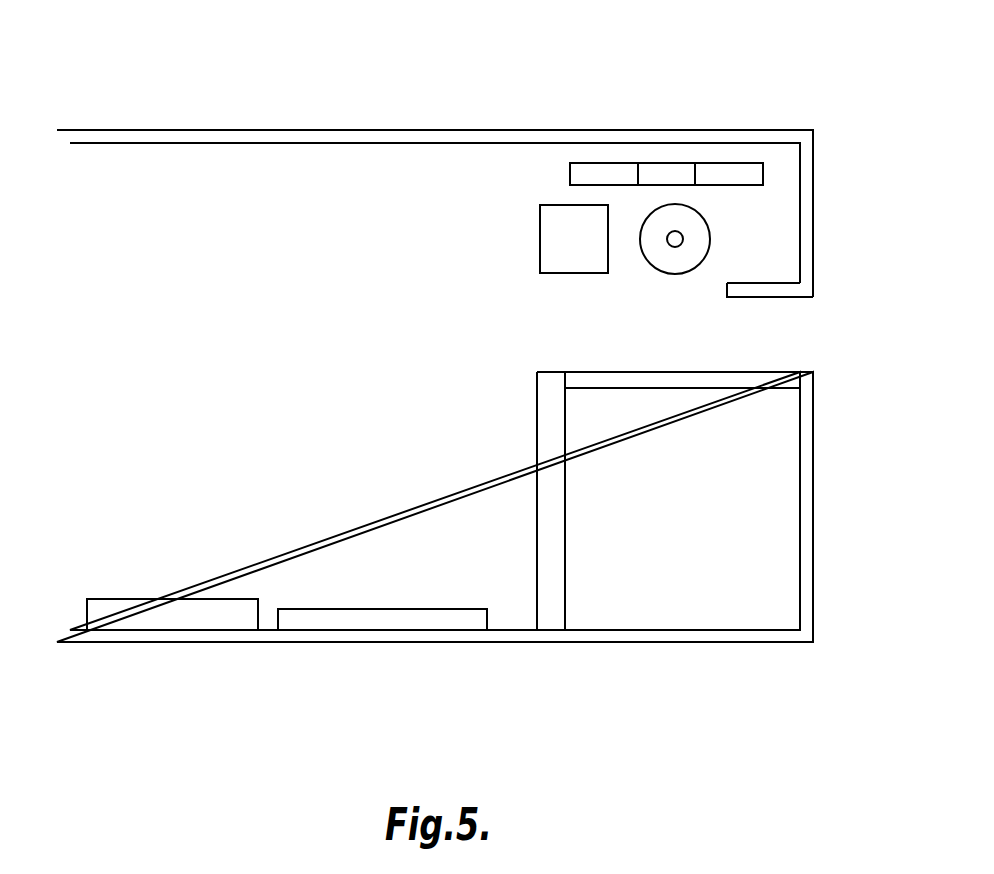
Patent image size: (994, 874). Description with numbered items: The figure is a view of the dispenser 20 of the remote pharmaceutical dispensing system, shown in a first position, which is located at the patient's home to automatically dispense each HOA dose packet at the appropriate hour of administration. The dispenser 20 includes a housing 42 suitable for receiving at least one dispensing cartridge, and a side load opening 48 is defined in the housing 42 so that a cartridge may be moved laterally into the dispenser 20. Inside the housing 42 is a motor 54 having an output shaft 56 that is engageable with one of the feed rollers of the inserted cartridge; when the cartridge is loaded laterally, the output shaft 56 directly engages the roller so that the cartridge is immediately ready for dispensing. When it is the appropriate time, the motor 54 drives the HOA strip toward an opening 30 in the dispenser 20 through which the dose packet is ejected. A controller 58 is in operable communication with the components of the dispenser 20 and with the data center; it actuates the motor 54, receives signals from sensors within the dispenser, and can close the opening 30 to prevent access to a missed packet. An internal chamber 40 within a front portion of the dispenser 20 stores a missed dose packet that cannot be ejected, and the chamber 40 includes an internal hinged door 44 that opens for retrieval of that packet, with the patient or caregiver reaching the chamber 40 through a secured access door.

The dispenser 20 is at (620, 114).
The opening 30 is at (820, 333).
The internal chamber 40 is at (713, 567).
The housing 42 is at (661, 137).
The internal hinged door 44 is at (770, 381).
The load opening 48 is at (194, 251).
The motor 54 is at (706, 226).
The output shaft 56 is at (675, 231).
The controller 58 is at (562, 205).